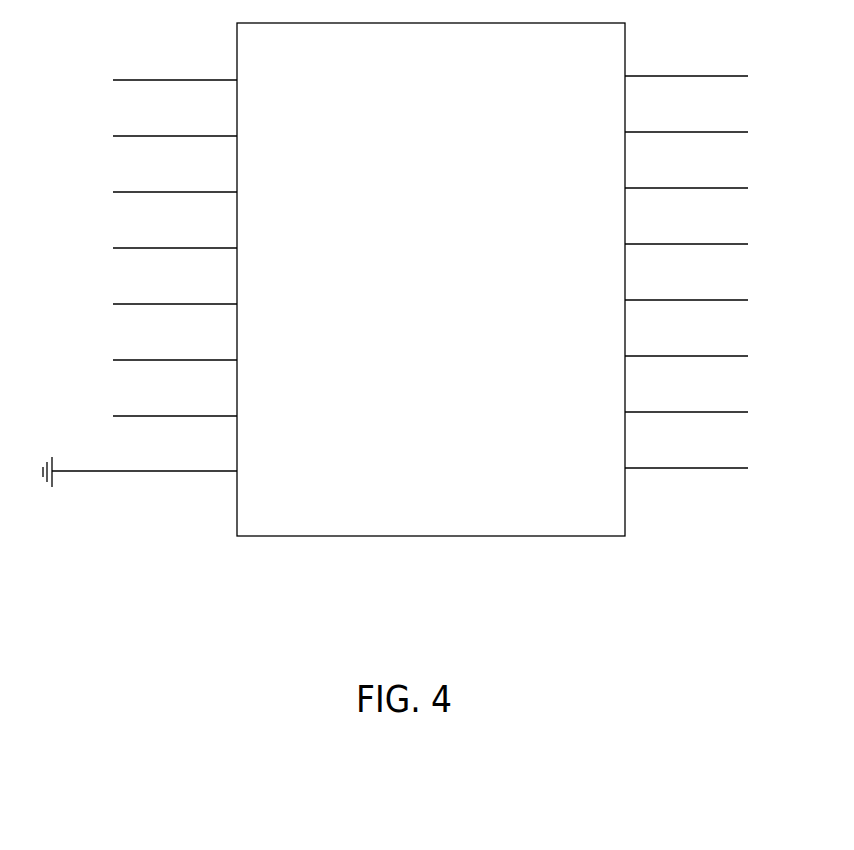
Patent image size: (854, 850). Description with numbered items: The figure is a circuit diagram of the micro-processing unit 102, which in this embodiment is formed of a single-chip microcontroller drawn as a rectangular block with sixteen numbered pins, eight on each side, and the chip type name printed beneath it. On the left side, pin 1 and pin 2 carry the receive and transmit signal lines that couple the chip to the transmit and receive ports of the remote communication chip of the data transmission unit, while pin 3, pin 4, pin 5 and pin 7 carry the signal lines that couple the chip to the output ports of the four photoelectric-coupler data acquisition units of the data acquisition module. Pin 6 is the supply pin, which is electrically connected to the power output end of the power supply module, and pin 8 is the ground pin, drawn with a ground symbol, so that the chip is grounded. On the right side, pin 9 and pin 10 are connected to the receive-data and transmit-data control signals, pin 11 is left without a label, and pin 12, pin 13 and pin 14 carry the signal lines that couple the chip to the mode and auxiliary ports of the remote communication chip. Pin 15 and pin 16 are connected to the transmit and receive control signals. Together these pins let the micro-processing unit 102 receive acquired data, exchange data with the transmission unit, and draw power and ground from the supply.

The micro-processing unit 102 is at (95, 36).
The pin 1 (RX1) 1 is at (175, 68).
The pin 2 (TX1) 2 is at (175, 124).
The pin 3 (P1.6) 3 is at (175, 180).
The pin 4 (P1.7) 4 is at (175, 236).
The pin 5 (P5.4) 5 is at (175, 292).
The pin 6 (VOUT) 6 is at (175, 348).
The pin 7 (P5.5) 7 is at (175, 404).
The pin 8 (ground) 8 is at (140, 467).
The pin 9 (RXD) 9 is at (687, 455).
The pin 10 (TXD) 10 is at (687, 399).
The pin 11 is at (686, 343).
The pin 12 (P3.3) 12 is at (688, 287).
The pin 13 (P3.4) 13 is at (688, 231).
The pin 14 (P3.5) 14 is at (688, 175).
The pin 15 (TX) 15 is at (686, 119).
The pin 16 (RX) 16 is at (686, 63).